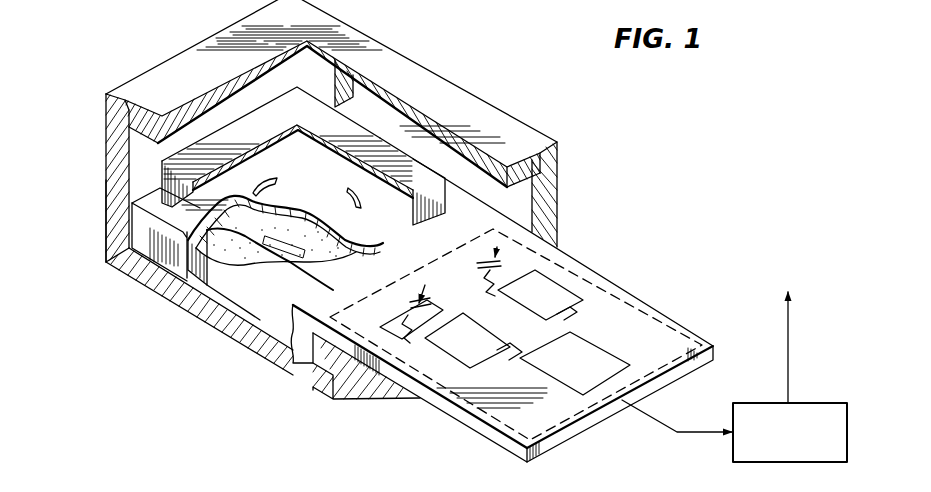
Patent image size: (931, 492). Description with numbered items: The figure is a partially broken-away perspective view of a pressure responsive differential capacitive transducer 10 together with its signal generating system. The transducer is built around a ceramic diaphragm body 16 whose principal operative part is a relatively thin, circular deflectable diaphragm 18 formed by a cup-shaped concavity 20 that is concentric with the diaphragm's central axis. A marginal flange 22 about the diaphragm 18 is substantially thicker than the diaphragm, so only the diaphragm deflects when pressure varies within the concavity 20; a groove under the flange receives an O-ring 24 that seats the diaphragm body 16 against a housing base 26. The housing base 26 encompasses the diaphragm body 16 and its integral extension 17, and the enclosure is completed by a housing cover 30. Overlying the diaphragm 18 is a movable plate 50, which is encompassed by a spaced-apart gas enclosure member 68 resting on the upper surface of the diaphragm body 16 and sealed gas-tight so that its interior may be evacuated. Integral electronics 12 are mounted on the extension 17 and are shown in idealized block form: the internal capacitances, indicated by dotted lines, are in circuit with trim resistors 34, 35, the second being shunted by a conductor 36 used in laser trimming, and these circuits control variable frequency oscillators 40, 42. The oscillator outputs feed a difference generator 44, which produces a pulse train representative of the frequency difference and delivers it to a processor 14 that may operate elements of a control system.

The pressure responsive differential capacitive transducer 10 is at (570, 229).
The integral electronics 12 is at (660, 322).
The processor 14 is at (830, 405).
The diaphragm body 16 is at (133, 262).
The integral extension 17 is at (573, 434).
The diaphragm portion 18 is at (280, 257).
The cup-shaped concavity 20 is at (273, 307).
The marginal flange 22 is at (160, 290).
The O-ring 24 is at (188, 312).
The housing base 26 is at (313, 390).
The housing cover 30 is at (415, 82).
The trim resistor 34 is at (497, 283).
The trim resistor 35 is at (409, 324).
The conductor 36 is at (402, 315).
The variable frequency oscillator F1 40 is at (568, 295).
The variable frequency oscillator F2 42 is at (462, 366).
The difference generator 44 is at (533, 393).
The movable plate 50 is at (307, 193).
The gas enclosure member 68 is at (385, 147).